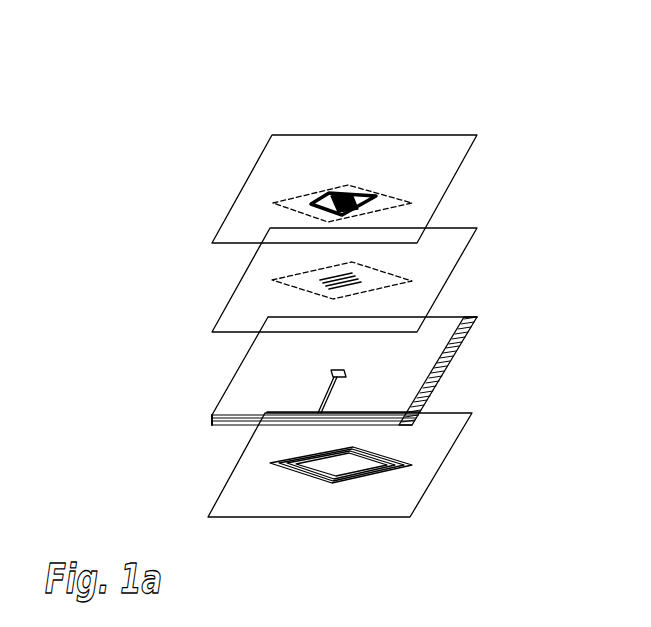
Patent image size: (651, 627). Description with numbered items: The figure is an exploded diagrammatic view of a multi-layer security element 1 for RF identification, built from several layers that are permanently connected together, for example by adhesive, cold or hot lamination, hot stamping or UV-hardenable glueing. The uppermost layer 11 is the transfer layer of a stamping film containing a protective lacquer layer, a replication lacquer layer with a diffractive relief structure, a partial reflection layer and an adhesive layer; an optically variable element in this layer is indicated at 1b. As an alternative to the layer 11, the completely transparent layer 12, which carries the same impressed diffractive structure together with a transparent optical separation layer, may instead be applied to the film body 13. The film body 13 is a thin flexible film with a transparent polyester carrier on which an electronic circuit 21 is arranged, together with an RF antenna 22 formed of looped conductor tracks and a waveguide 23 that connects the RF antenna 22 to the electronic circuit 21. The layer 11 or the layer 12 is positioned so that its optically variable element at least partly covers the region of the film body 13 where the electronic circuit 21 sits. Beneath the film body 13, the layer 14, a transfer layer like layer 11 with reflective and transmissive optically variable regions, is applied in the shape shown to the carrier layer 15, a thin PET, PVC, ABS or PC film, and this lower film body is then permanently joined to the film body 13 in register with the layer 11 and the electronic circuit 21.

The multi-layer security element 1 is at (450, 103).
The integrated circuit chip 1b is at (345, 196).
The layer 11 is at (457, 182).
The layer 12 is at (460, 275).
The film body 13 is at (478, 338).
The electronic circuit 21 is at (332, 373).
The RF antenna 22 is at (212, 424).
The waveguide 23 is at (333, 392).
The layer 14 is at (412, 457).
The carrier layer 15 is at (430, 492).